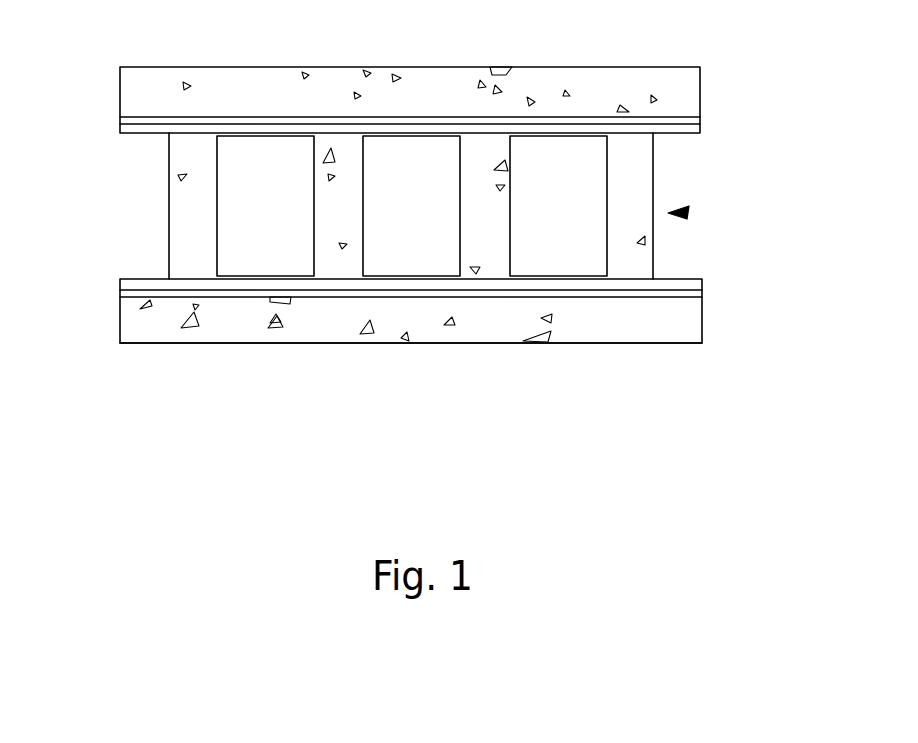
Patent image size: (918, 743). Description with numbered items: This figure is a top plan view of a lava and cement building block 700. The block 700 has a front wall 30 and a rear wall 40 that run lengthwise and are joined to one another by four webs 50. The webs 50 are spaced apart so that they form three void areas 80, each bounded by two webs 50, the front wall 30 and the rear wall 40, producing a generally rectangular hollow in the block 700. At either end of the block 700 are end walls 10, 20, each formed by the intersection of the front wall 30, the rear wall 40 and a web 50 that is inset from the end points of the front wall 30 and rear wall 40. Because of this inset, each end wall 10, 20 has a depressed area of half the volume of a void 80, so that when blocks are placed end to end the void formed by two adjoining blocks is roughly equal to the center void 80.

The end wall 10 is at (423, 212).
The end wall 20 is at (121, 336).
The front wall 30 is at (433, 67).
The rear wall 40 is at (437, 343).
The web 50 is at (490, 237).
The void area 80 is at (275, 170).
The Lava and Cement Building Block 700 is at (686, 212).